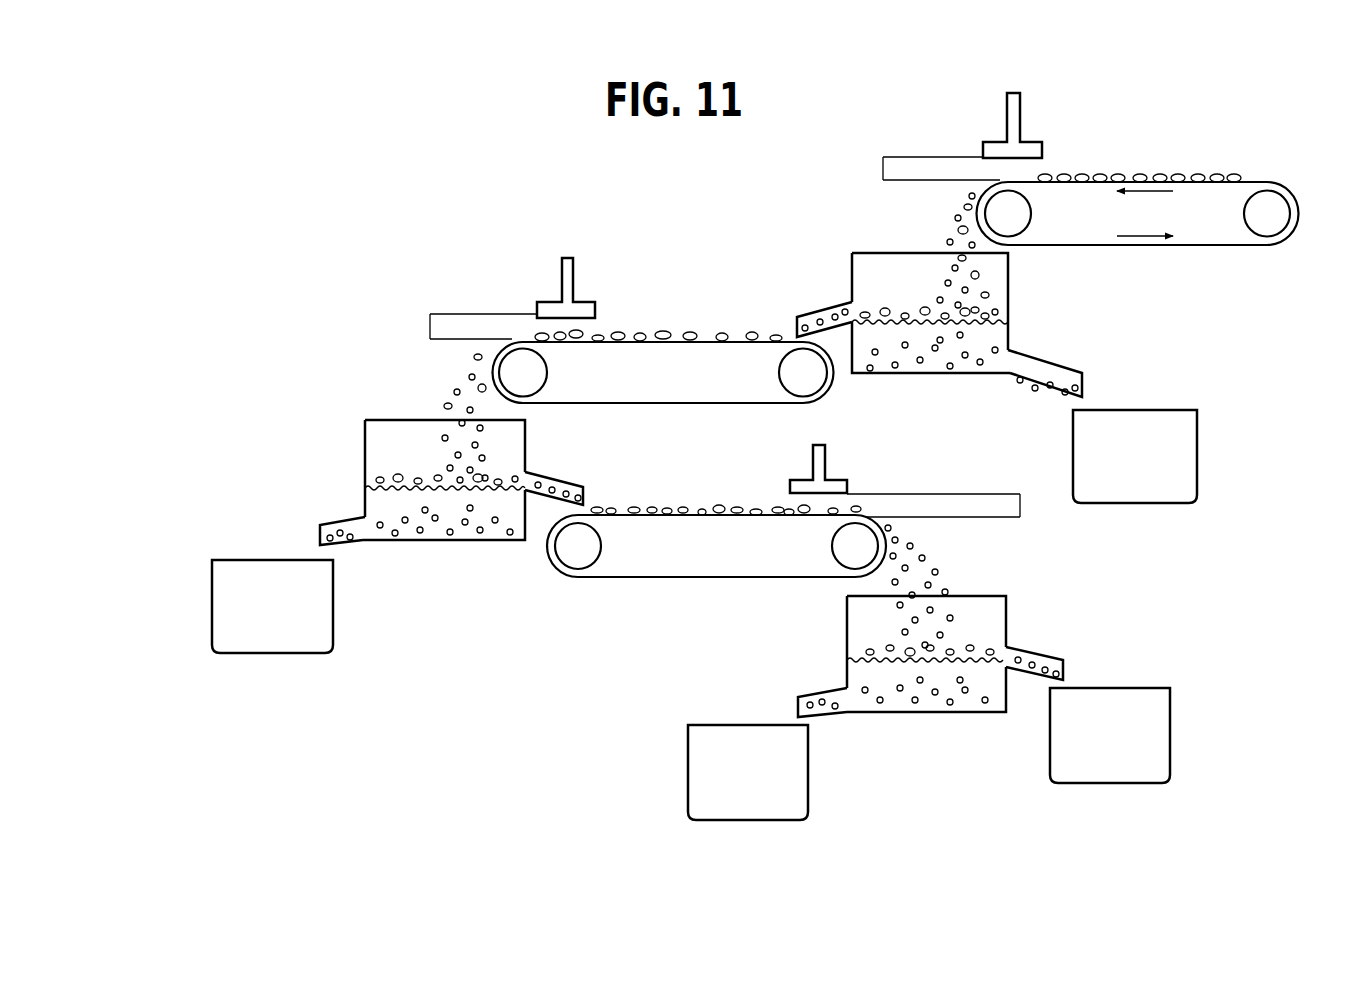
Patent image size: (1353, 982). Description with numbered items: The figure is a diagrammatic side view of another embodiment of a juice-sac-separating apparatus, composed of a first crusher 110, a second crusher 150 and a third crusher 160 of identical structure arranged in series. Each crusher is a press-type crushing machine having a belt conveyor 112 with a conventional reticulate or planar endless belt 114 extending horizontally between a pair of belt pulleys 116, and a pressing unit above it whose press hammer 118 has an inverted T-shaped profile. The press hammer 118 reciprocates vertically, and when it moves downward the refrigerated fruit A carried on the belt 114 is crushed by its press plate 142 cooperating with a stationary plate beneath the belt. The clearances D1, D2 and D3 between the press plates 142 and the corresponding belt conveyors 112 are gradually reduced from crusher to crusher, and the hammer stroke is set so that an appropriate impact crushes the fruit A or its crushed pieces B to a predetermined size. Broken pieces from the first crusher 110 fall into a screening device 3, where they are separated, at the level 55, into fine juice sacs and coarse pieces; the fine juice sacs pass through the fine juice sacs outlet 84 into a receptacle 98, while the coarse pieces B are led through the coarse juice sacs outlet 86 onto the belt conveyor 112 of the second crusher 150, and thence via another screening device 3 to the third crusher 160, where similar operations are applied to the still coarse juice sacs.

The screening device 3 is at (1012, 302).
The material level line 55 is at (897, 321).
The fine juice sacs outlet 84 is at (1075, 370).
The coarse juice sacs outlet 86 is at (813, 316).
The receptacle 98 is at (1197, 427).
The first crusher 110 is at (1102, 130).
The belt conveyor 112 is at (1170, 247).
The endless belt 114 is at (1125, 246).
The belt pulleys 116 is at (1017, 220).
The press hammer 118 is at (990, 131).
The press plate 142 is at (1038, 140).
The second crusher 150 is at (621, 312).
The third crusher 160 is at (755, 490).
The refrigerated fruit A is at (1145, 178).
The particles on subsequent conveyors B is at (750, 333).
The clearance D1 is at (926, 171).
The clearance D2 is at (467, 329).
The clearance D3 is at (949, 508).